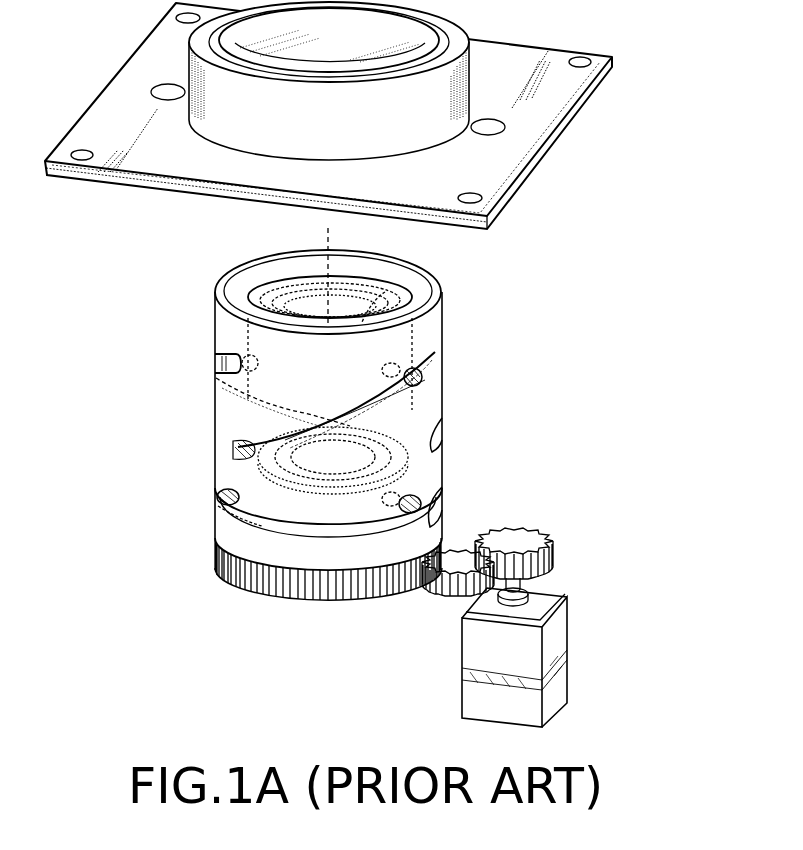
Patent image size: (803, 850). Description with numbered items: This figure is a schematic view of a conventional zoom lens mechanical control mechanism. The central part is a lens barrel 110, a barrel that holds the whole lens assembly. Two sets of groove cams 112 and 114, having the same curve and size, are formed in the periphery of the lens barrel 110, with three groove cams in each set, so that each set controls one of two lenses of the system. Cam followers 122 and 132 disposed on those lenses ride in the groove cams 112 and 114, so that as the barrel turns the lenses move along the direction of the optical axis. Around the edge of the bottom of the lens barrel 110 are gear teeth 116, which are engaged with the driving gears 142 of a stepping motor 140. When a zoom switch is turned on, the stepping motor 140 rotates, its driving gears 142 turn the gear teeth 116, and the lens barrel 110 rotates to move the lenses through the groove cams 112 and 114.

The lens barrel 110 is at (215, 332).
The groove cams 112 is at (235, 443).
The groove cams 114 is at (222, 518).
The gear teeth 116 is at (327, 604).
The cam followers 122 is at (385, 292).
The cam followers 132 is at (218, 494).
The stepping motor 140 is at (572, 657).
The driving gears 142 is at (450, 593).